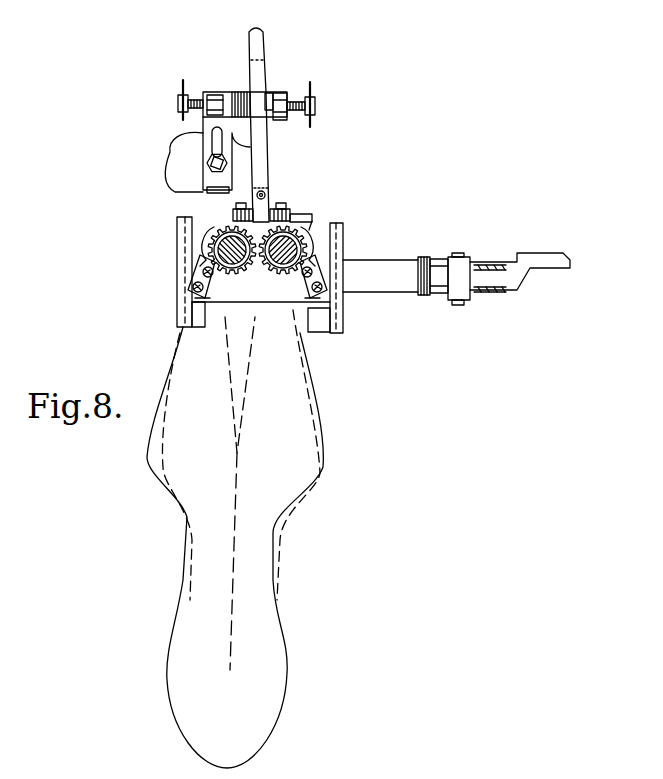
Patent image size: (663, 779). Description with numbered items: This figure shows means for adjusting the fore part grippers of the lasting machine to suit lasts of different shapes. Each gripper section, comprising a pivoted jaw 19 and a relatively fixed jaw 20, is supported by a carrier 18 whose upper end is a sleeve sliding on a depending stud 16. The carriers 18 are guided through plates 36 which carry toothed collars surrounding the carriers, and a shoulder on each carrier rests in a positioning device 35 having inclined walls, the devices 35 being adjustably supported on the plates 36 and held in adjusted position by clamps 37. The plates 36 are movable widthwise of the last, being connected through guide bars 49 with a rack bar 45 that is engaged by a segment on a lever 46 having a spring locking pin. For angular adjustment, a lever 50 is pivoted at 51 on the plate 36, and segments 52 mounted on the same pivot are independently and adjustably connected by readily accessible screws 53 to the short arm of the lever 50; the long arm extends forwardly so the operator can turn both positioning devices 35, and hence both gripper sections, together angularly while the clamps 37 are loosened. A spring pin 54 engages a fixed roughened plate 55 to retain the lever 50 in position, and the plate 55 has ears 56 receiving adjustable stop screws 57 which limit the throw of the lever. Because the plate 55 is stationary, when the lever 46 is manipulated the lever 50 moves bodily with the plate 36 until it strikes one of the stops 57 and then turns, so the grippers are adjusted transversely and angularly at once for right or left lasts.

The stud 16 is at (205, 244).
The carrier 18 is at (206, 264).
The pivoted jaw 19 is at (340, 325).
The fixed jaw 20 is at (303, 316).
The positioning device 35 is at (205, 242).
The plate 36 is at (313, 220).
The clamp 37 is at (199, 292).
The rack bar 45 is at (410, 262).
The lever 46 is at (496, 266).
The guide bar 49 is at (179, 230).
The lever 50 is at (278, 136).
The pivot 51 is at (268, 195).
The segment 52 is at (237, 213).
The screw 53 is at (240, 206).
The spring pin 54 is at (266, 90).
The roughened plate 55 is at (233, 92).
The ear 56 is at (217, 90).
The stop screw 57 is at (270, 92).